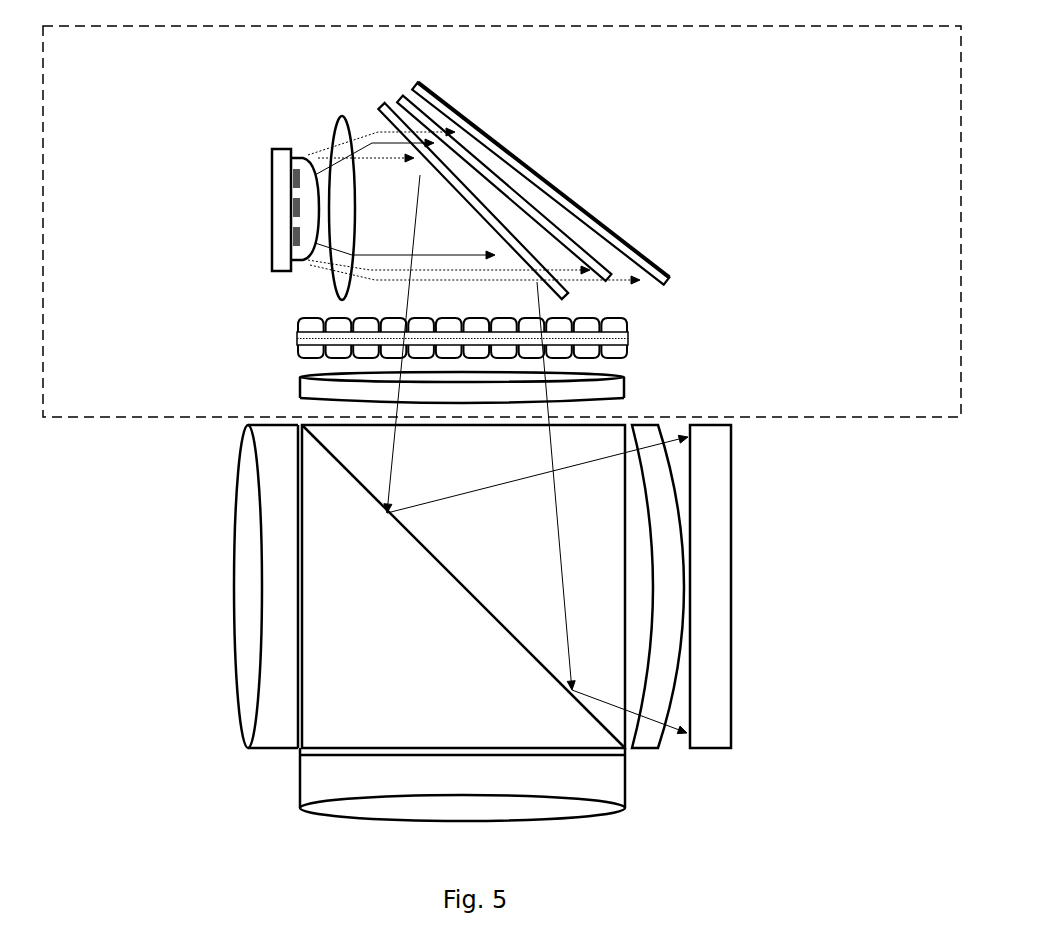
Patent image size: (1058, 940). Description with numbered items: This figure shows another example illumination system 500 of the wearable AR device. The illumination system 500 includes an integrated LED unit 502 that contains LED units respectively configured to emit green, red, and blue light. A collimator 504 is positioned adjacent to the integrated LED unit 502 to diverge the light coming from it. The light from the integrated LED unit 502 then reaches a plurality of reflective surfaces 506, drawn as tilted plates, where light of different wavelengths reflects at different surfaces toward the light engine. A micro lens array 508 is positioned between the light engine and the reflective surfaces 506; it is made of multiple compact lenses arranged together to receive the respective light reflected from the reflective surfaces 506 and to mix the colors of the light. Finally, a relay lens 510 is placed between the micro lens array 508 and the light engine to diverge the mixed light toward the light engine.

The illumination system 500 is at (487, 53).
The integrated LED unit 502 is at (186, 195).
The collimator 504 is at (243, 186).
The reflective surfaces 506 is at (567, 298).
The micro lens array 508 is at (367, 354).
The relay lens 510 is at (626, 388).